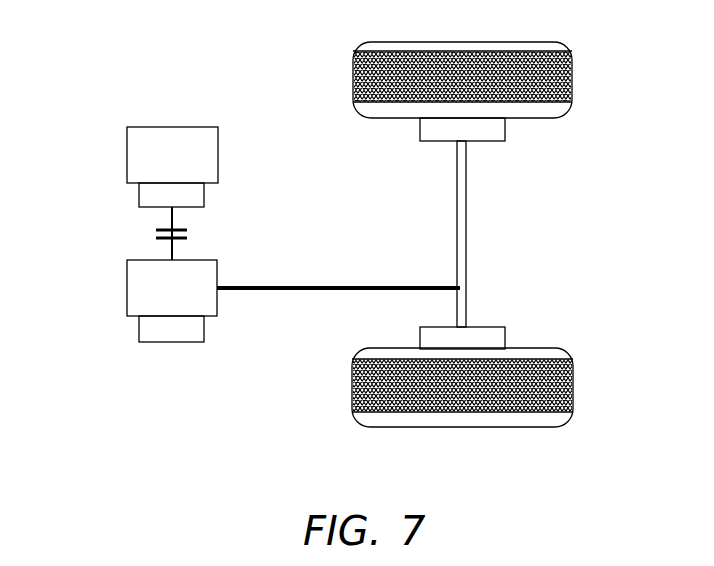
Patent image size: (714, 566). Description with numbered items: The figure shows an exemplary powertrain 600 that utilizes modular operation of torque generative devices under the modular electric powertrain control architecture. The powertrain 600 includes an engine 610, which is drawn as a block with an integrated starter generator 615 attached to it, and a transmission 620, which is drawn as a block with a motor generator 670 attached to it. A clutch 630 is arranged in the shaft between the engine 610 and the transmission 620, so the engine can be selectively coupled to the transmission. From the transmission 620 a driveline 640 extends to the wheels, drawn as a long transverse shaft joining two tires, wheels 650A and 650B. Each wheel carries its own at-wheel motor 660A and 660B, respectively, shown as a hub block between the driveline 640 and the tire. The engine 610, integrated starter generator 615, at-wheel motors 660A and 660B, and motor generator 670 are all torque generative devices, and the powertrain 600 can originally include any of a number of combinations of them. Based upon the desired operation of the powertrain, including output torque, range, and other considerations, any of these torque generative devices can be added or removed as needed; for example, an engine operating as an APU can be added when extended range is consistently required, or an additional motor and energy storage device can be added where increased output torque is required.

The powertrain 600 is at (117, 86).
The engine 610 is at (172, 155).
The integrated starter generator 615 is at (139, 198).
The transmission 620 is at (172, 288).
The clutch 630 is at (154, 233).
The driveline 640 is at (467, 247).
The wheel 650A is at (573, 80).
The wheel 650B is at (573, 389).
The at-wheel motor 660A is at (506, 128).
The at-wheel motor 660B is at (506, 338).
The motor generator 670 is at (172, 343).